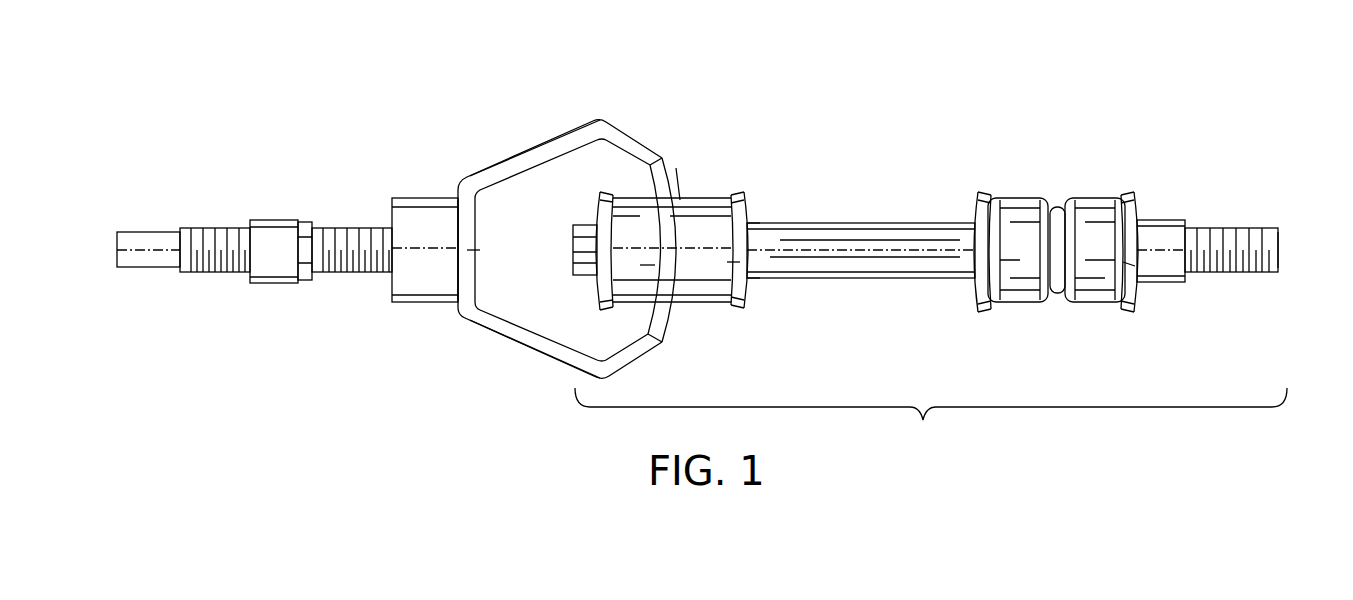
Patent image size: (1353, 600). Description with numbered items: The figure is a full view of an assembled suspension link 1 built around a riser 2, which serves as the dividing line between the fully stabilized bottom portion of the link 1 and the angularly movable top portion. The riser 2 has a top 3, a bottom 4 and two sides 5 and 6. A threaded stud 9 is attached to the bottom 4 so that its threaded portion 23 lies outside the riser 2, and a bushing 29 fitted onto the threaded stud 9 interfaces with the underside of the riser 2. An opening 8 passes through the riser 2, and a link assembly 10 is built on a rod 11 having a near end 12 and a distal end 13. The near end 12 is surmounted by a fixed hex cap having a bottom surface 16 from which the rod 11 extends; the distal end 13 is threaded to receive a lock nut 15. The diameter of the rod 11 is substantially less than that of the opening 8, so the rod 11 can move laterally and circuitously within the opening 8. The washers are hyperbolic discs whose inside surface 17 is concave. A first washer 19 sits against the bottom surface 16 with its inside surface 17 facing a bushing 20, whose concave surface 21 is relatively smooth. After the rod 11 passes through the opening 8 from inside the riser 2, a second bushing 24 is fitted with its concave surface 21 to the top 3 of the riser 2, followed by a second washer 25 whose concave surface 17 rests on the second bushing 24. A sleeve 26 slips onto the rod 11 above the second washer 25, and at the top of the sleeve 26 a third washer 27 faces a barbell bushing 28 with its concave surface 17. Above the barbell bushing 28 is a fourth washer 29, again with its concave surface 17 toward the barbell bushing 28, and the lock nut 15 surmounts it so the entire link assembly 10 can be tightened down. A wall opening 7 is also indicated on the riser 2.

The suspension link 1 is at (930, 90).
The riser 2 is at (697, 98).
The top 3 is at (676, 168).
The bottom 4 is at (457, 190).
The side 5 is at (602, 120).
The side 6 is at (568, 372).
The housing opening 7 is at (468, 250).
The opening 8 is at (650, 265).
The threaded stud 9 is at (210, 232).
The link assembly 10 is at (931, 423).
The rod 11 is at (1218, 228).
The near end 12 is at (597, 217).
The distal end 13 is at (1278, 252).
The lock nut 15 is at (1163, 282).
The bottom surface 16 is at (572, 245).
The inside surface 17 is at (727, 263).
The first washer 19 is at (607, 192).
The bushing 20 is at (614, 259).
The concave surface 21 is at (690, 230).
The threaded portion 23 is at (333, 200).
The second bushing 24 is at (747, 235).
The second washer 25 is at (747, 297).
The sleeve 26 is at (880, 238).
The third washer 27 is at (985, 192).
The barbell bushing 28 is at (1080, 198).
The bushing / fourth washer 29 is at (398, 254).